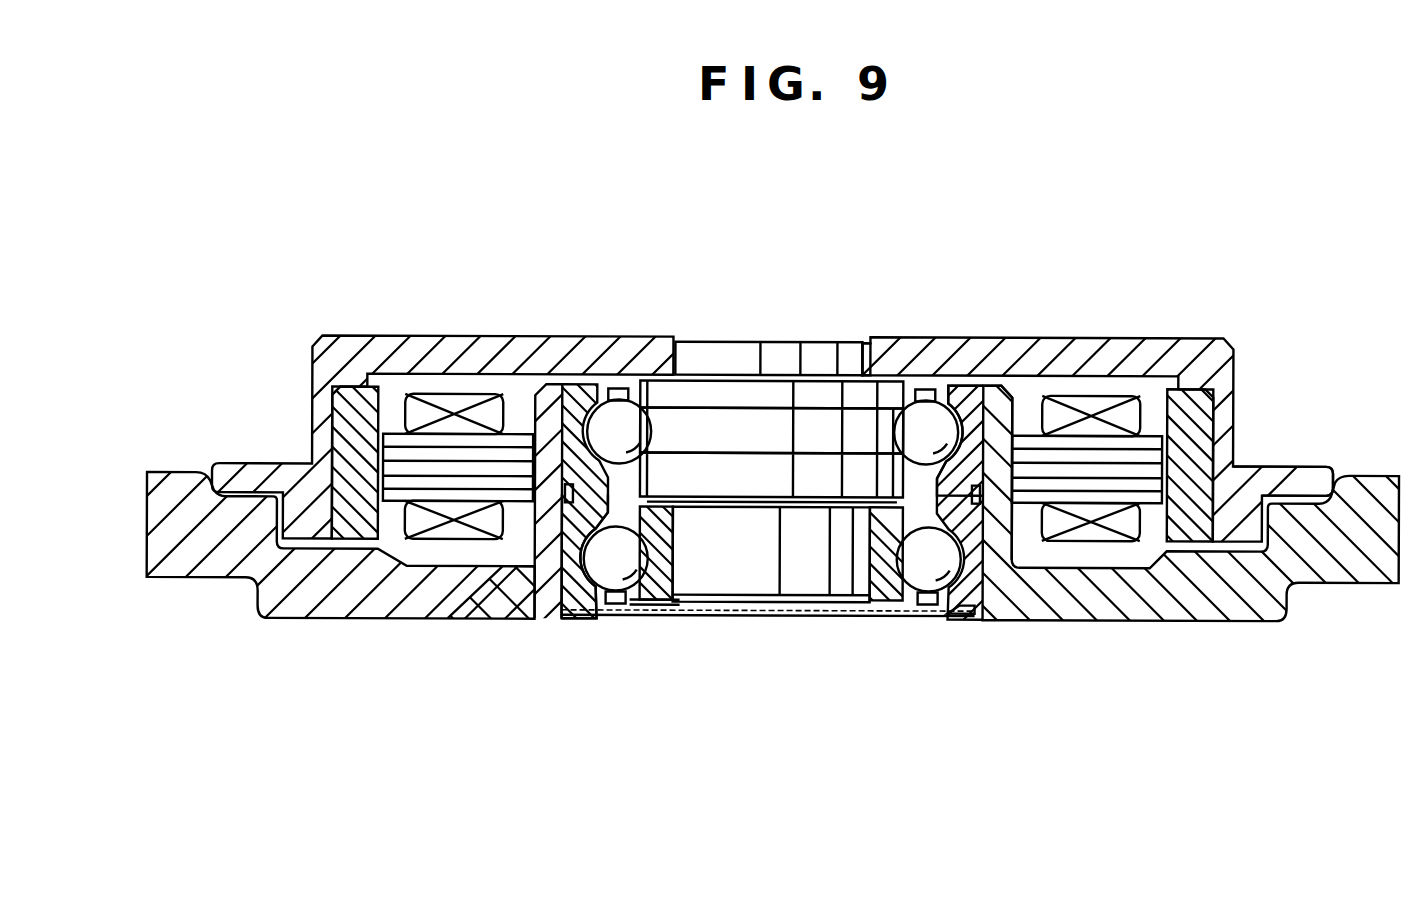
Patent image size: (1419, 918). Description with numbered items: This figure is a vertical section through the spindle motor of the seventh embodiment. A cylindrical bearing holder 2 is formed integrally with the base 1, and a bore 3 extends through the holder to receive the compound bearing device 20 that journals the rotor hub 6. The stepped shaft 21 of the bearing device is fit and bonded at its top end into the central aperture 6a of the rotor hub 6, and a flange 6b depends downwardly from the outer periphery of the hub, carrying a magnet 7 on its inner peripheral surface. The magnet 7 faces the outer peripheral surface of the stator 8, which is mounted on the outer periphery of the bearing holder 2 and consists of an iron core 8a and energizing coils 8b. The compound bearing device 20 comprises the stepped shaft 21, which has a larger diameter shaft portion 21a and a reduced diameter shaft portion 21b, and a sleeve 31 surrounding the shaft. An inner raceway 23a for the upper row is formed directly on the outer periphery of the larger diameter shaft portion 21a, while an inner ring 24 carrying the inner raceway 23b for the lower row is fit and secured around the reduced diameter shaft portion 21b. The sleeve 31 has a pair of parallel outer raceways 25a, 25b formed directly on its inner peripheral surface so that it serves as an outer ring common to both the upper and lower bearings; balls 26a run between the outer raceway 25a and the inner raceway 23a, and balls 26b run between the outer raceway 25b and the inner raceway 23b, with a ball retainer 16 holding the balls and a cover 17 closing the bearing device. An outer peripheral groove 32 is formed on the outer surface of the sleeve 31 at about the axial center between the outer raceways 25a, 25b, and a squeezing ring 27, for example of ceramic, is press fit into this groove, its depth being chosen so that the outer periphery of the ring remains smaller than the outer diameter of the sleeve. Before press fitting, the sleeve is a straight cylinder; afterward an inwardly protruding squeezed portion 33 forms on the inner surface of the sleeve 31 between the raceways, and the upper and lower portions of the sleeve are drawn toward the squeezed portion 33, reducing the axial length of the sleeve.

The base 1 is at (1247, 610).
The cylindrical bearing holder 2 is at (1000, 386).
The bore 3 is at (982, 388).
The rotor hub 6 is at (1135, 350).
The central aperture 6a is at (863, 378).
The flange 6b is at (1237, 408).
The magnet 7 is at (1207, 453).
The stator 8 is at (1107, 553).
The iron core 8a is at (1152, 510).
The energizing coils 8b is at (1112, 505).
The ball retainer 16 is at (930, 397).
The cover 17 is at (845, 614).
The compound bearing device 20 is at (967, 609).
The stepped shaft 21 is at (679, 499).
The larger diameter shaft portion 21a is at (748, 393).
The reduced diameter shaft portion 21b is at (800, 592).
The inner raceway 23a is at (773, 430).
The inner raceway 23b is at (671, 661).
The inner ring 24 is at (662, 594).
The outer raceway 25a is at (600, 387).
The outer raceway 25b is at (598, 602).
The balls 26a is at (622, 418).
The balls 26b is at (614, 574).
The squeezing ring 27 is at (556, 497).
The sleeve 31 is at (955, 405).
The outer peripheral groove 32 is at (510, 562).
The squeezed portion 33 is at (528, 605).